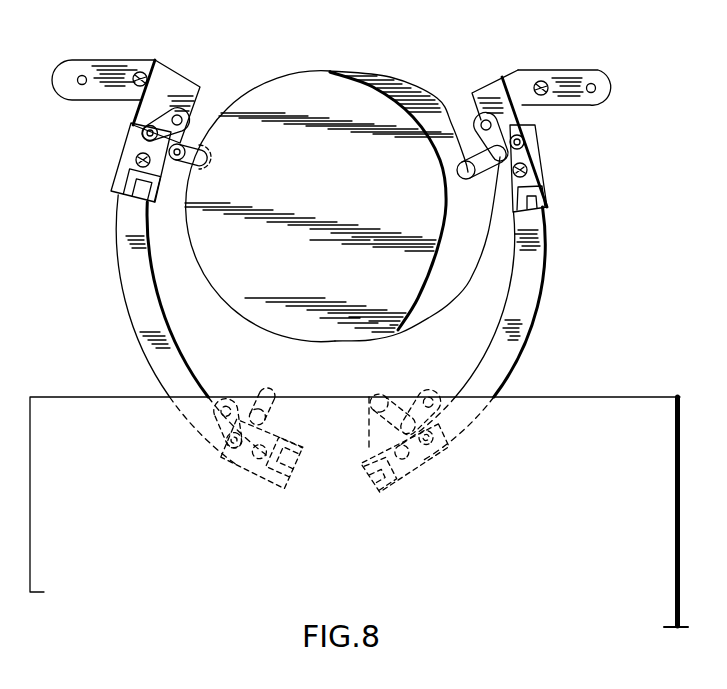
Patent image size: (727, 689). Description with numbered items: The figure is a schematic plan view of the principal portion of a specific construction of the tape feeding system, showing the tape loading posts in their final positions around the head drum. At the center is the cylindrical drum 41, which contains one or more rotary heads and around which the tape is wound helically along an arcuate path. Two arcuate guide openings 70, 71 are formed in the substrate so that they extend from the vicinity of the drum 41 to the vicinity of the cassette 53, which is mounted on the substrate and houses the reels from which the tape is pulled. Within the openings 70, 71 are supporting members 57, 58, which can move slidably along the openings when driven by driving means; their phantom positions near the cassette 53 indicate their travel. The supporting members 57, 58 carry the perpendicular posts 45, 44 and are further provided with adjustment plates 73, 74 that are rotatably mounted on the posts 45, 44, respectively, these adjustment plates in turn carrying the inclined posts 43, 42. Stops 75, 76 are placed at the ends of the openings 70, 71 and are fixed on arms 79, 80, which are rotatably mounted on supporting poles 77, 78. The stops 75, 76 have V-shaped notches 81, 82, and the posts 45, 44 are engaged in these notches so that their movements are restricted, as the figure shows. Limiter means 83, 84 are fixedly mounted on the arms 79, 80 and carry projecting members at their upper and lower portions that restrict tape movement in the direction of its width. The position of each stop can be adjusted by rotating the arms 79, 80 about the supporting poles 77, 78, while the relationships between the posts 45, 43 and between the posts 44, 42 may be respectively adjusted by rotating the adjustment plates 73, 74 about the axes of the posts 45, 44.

The cylindrical drum 41 is at (322, 90).
The inclined post 42 is at (204, 150).
The inclined post 43 is at (460, 171).
The perpendicular post 44 is at (133, 127).
The perpendicular post 45 is at (525, 143).
The cassette 53 is at (598, 400).
The supporting member 57 is at (548, 160).
The supporting member 58 is at (125, 165).
The arcuate guide opening 70 is at (522, 302).
The arcuate guide opening 71 is at (130, 268).
The adjustment plate 73 is at (552, 198).
The adjustment plate 74 is at (118, 190).
The stop 75 is at (492, 90).
The stop 76 is at (180, 85).
The supporting pole 77 is at (598, 89).
The supporting pole 78 is at (80, 75).
The arm 79 is at (565, 71).
The arm 80 is at (108, 72).
The V-shaped notch 81 is at (525, 140).
The V-shaped notch 82 is at (145, 122).
The limiter means 83 is at (478, 122).
The limiter means 84 is at (196, 126).